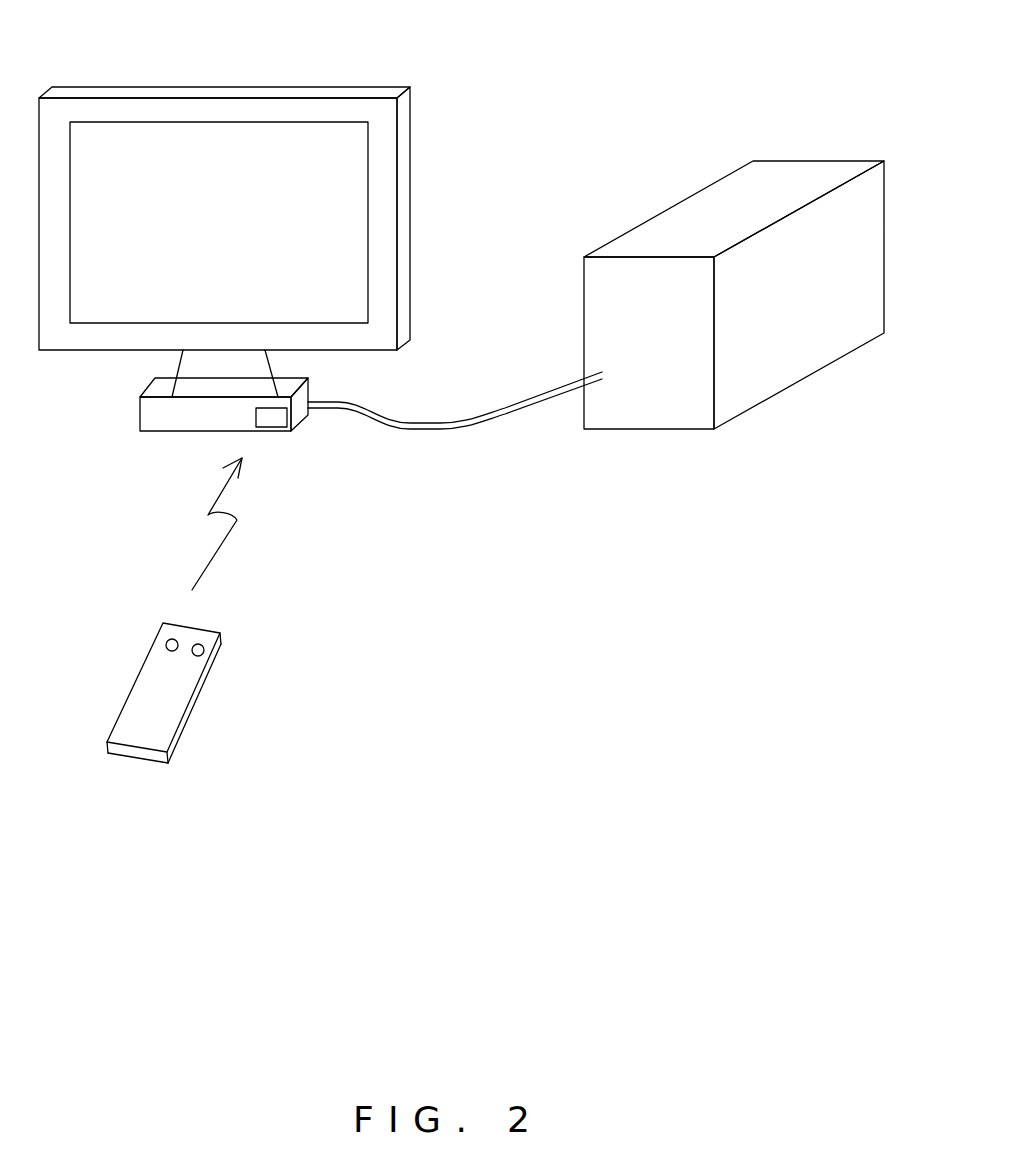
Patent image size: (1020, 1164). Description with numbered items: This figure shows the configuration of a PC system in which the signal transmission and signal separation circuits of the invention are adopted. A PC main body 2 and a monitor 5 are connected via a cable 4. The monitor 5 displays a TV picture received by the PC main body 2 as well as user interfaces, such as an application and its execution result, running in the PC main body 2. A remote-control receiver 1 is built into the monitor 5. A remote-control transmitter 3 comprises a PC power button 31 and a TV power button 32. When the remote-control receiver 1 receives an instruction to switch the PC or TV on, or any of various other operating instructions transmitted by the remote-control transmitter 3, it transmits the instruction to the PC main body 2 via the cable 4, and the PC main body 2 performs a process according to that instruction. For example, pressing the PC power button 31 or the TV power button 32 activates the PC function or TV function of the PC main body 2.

The remote-control receiver 1 is at (268, 428).
The PC main body 2 is at (800, 382).
The remote-control transmitter 3 is at (303, 670).
The cable 4 is at (477, 418).
The monitor 5 is at (340, 97).
The PC power button 31 is at (167, 641).
The TV power button 32 is at (202, 645).